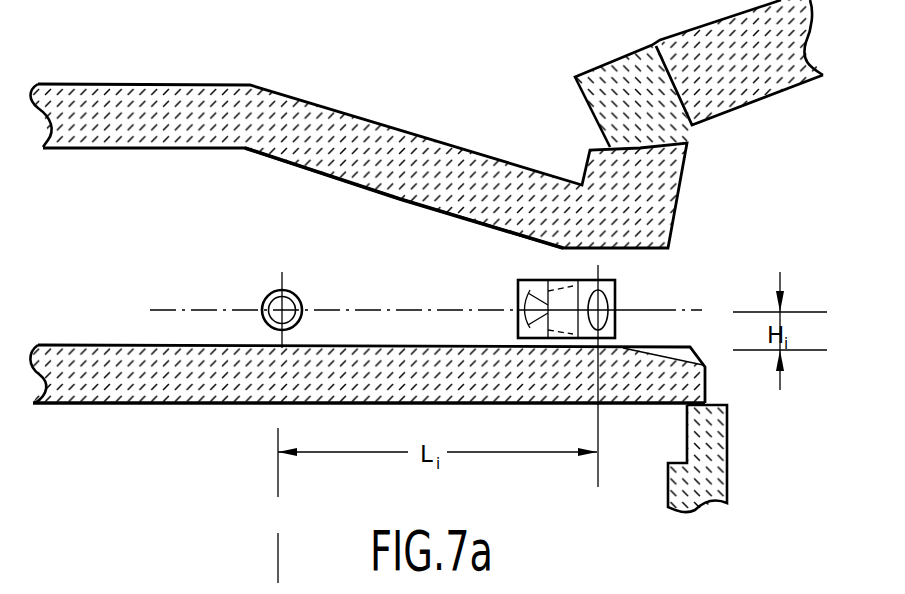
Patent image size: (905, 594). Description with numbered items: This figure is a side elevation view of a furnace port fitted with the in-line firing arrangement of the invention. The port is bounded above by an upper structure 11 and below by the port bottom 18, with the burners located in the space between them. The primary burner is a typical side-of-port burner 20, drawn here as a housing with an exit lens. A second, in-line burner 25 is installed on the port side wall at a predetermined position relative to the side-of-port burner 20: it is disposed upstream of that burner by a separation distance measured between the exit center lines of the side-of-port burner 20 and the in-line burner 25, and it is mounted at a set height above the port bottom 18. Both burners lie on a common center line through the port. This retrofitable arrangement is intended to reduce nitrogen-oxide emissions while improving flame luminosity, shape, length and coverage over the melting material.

The housing member 11 is at (447, 104).
The port bottom 18 is at (130, 403).
The side-of-port burner 20 is at (518, 288).
The in-line burner 25 is at (264, 300).